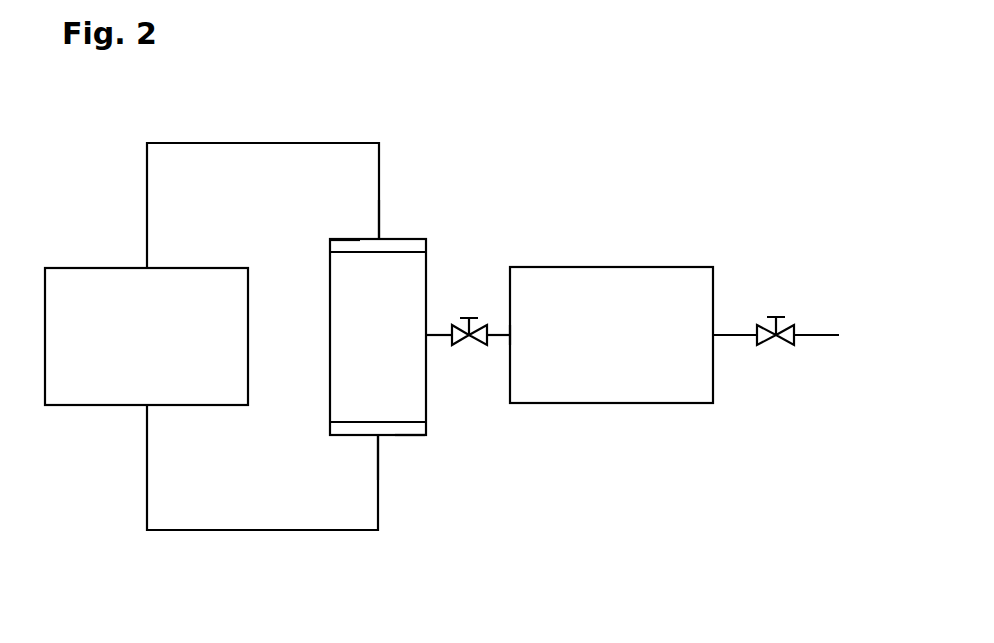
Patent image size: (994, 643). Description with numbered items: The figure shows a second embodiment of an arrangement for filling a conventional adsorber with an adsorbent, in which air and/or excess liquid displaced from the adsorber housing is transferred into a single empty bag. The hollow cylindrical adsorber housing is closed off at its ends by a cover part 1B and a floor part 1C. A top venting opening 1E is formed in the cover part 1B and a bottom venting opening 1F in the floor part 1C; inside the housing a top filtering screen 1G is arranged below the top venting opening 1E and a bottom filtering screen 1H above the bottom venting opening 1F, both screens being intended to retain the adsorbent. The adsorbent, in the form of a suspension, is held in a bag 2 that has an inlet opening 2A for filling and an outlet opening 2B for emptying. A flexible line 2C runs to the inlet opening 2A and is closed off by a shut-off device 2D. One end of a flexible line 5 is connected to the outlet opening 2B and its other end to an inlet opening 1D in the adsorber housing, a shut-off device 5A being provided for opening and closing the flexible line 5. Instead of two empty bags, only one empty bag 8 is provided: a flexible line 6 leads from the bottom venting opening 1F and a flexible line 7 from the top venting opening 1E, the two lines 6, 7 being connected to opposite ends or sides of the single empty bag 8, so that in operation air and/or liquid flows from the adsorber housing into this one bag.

The containing means 2 is at (616, 262).
The inlet opening 2A is at (715, 332).
The outlet opening 2B is at (508, 330).
The flexible line 2C is at (828, 332).
The shut-off device 2D is at (786, 325).
The flexible line 5 is at (497, 340).
The shut-off device 5A is at (452, 326).
The flexible line 6 is at (217, 532).
The flexible line 7 is at (218, 142).
The empty bag 8 is at (101, 413).
The cover part 1B is at (338, 237).
The floor part 1C is at (415, 437).
The inlet opening 1D is at (430, 340).
The top venting opening 1E is at (382, 237).
The bottom venting opening 1F is at (378, 437).
The top filtering screen 1G is at (393, 250).
The bottom filtering screen 1H is at (352, 420).